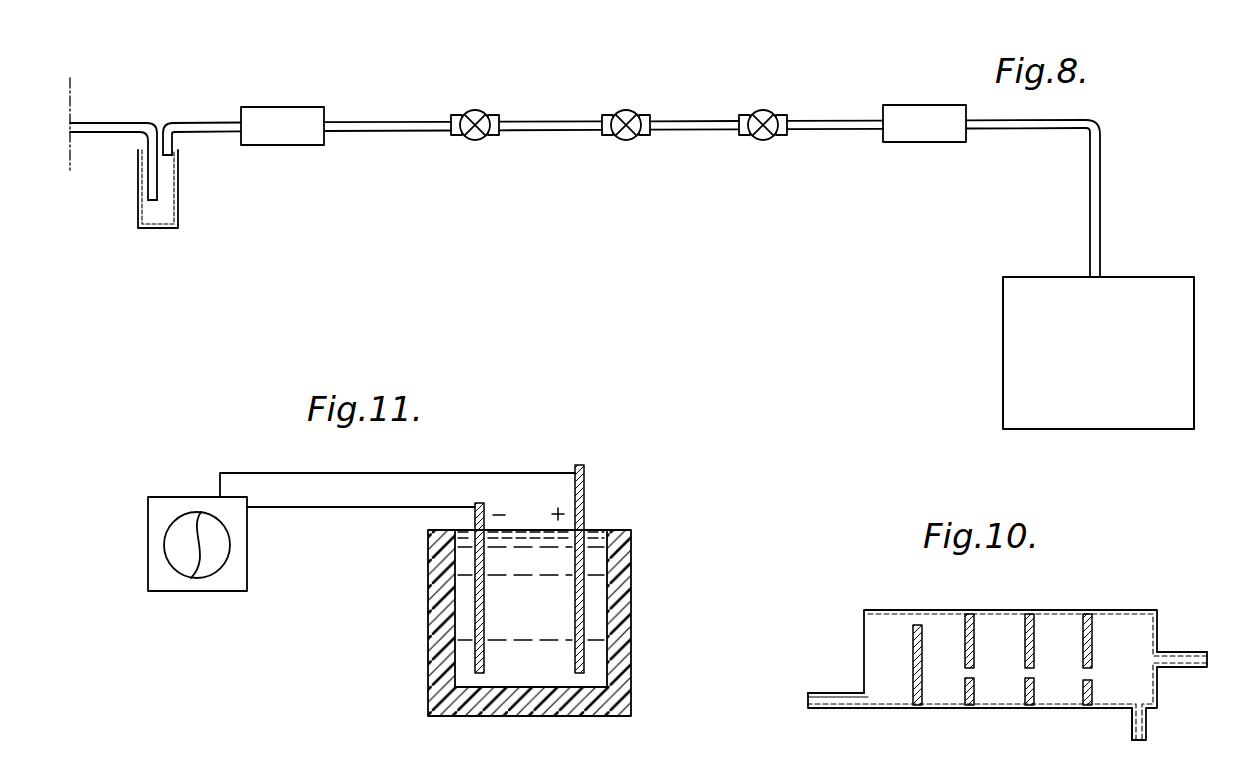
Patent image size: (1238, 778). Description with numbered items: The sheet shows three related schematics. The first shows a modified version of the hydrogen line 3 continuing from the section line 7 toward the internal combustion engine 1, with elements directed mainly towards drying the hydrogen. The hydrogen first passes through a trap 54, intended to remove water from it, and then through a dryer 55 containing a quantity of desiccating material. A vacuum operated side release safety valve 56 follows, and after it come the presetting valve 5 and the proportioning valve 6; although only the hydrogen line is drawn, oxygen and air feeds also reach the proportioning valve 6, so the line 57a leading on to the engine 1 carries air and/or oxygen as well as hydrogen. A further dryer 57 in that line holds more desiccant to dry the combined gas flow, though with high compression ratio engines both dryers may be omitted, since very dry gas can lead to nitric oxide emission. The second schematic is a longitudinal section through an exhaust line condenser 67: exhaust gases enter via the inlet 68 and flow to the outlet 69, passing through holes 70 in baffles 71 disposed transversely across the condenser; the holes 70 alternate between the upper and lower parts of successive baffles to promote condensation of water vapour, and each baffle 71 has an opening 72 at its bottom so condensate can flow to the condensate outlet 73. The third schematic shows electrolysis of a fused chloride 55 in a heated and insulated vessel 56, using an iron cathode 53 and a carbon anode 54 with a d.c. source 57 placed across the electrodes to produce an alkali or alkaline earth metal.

In FIG. 8, the engine 1 is at (1046, 292).
In FIG. 8, the hydrogen line 3 is at (397, 132).
In FIG. 8, the presetting valve 5 is at (626, 140).
In FIG. 8, the proportioning valve 6 is at (763, 141).
In FIG. 8, the line 7- 7 is at (73, 85).
In FIG. 11, the cathode 53 is at (477, 622).
In FIG. 8, the trap 54 is at (168, 212).
In FIG. 11, the trap 54 is at (583, 582).
In FIG. 8, the dryer 55 is at (311, 145).
In FIG. 11, the dryer 55 is at (526, 648).
In FIG. 8, the safety valve 56 is at (475, 140).
In FIG. 11, the safety valve 56 is at (622, 622).
In FIG. 8, the dryer 57 is at (933, 142).
In FIG. 11, the dryer 57 is at (167, 505).
In FIG. 8, the line 57a is at (1065, 130).
In FIG. 10, the condenser 67 is at (1008, 610).
In FIG. 10, the inlet 68 is at (834, 697).
In FIG. 10, the outlet 69 is at (1200, 655).
In FIG. 10, the holes 70 is at (914, 624).
In FIG. 10, the baffles 71 is at (1092, 634).
In FIG. 10, the opening 72 is at (1035, 699).
In FIG. 10, the condensate outlet 73 is at (1147, 730).